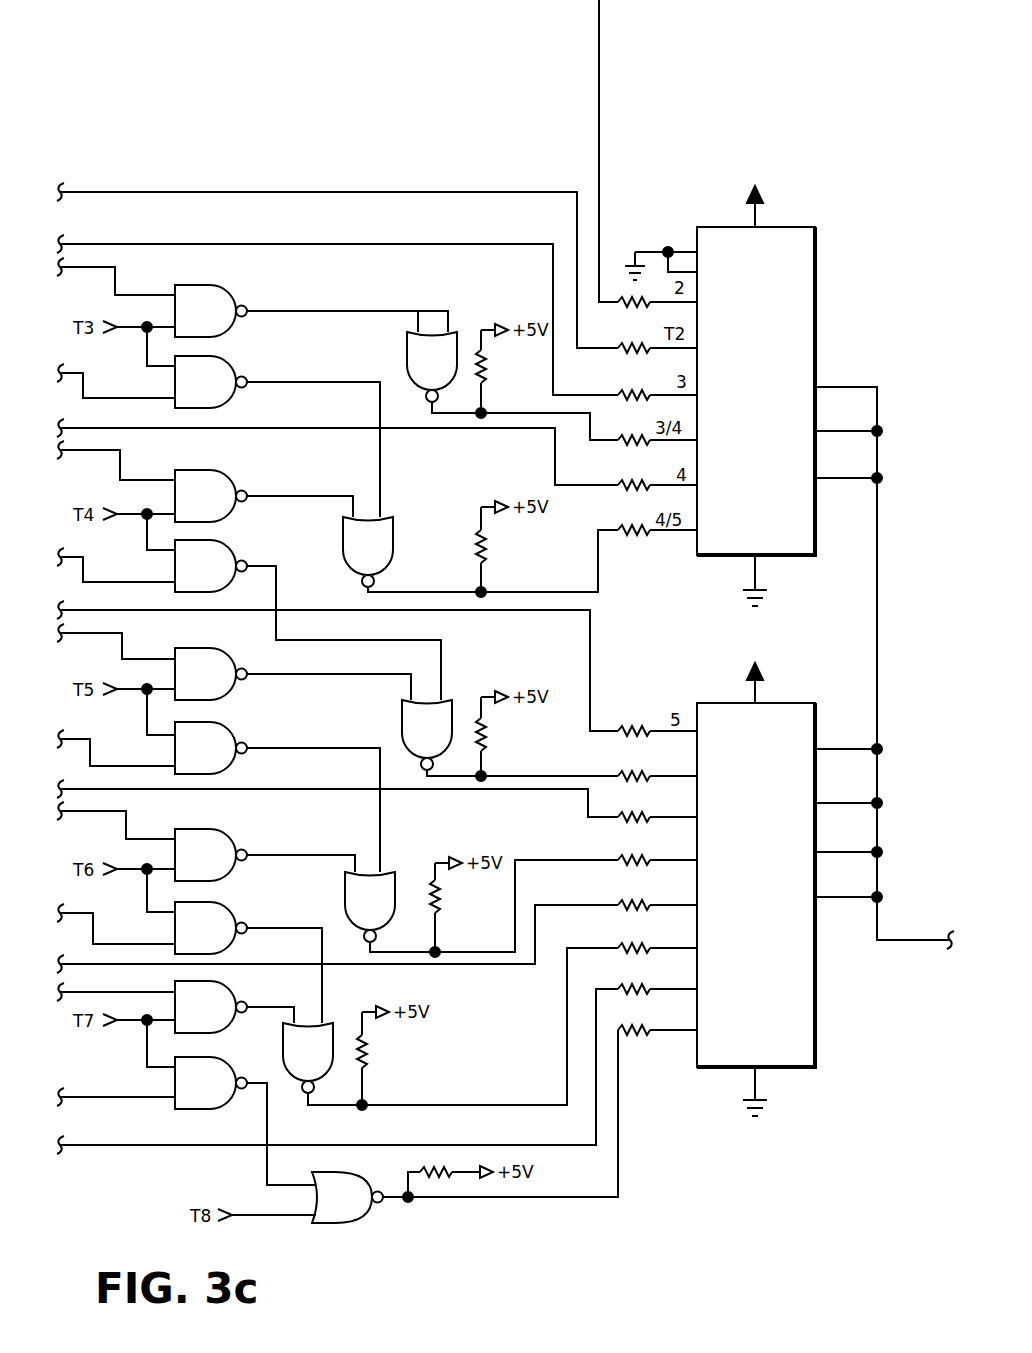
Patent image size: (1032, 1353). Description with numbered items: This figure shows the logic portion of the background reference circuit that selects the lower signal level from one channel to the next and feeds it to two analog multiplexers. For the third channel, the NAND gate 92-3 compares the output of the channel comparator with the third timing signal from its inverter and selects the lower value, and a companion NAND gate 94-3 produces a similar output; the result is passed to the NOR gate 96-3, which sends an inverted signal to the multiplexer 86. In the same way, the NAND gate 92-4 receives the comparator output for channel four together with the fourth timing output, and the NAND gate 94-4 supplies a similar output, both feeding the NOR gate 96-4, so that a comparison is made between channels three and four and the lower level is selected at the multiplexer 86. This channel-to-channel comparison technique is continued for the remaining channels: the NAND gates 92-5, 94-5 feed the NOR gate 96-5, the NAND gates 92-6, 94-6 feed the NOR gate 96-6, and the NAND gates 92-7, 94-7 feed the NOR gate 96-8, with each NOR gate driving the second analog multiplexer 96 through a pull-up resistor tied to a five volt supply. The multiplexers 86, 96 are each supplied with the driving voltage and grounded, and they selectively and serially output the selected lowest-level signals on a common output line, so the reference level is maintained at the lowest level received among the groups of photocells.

The NAND gate 92-3 is at (228, 285).
The NAND gate 94-3 is at (228, 358).
The NOR gate 96-3 is at (455, 335).
The NAND gate 92-4 is at (228, 470).
The NAND gate 94-4 is at (228, 542).
The NOR gate 96-4 is at (392, 515).
The NAND gate 92-5 is at (228, 648).
The NAND gate 94-5 is at (228, 724).
The NOR gate 96-5 is at (450, 705).
The NAND gate 92-6 is at (228, 830).
The NAND gate 94-6 is at (228, 903).
The NOR gate 96-6 is at (392, 876).
The NAND gate 92-7 is at (225, 983).
The NAND gate 94-7 is at (222, 1058).
The NOR gate 96-8 is at (333, 1025).
The multiplexer 86 is at (815, 306).
The analog multiplexer 96 is at (785, 703).